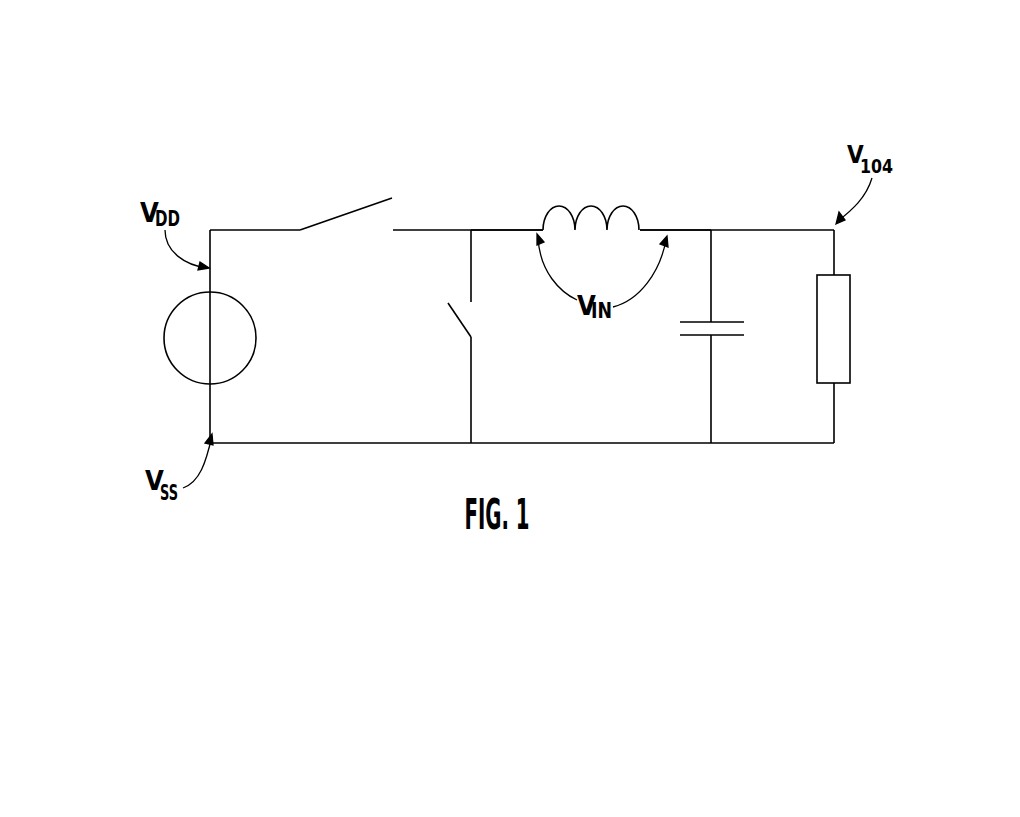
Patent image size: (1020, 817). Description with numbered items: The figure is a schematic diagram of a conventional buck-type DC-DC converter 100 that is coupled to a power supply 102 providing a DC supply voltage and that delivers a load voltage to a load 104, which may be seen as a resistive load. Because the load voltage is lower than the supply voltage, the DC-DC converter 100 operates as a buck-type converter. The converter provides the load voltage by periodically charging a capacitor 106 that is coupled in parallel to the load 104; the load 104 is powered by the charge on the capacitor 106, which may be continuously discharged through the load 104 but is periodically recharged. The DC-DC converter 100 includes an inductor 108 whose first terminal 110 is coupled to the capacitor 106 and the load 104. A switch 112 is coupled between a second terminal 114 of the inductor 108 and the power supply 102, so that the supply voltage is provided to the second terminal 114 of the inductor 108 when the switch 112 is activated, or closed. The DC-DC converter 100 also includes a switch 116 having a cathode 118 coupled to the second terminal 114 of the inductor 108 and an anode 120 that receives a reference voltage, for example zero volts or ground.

The DC-DC converter 100 is at (200, 90).
The power supply 102 is at (167, 325).
The load 104 is at (853, 328).
The capacitor 106 is at (698, 338).
The inductor 108 is at (583, 203).
The first terminal 110 is at (652, 227).
The switch 112 is at (337, 218).
The second terminal 114 is at (532, 227).
The switch 116 is at (460, 323).
The cathode 118 is at (468, 269).
The anode 120 is at (472, 382).